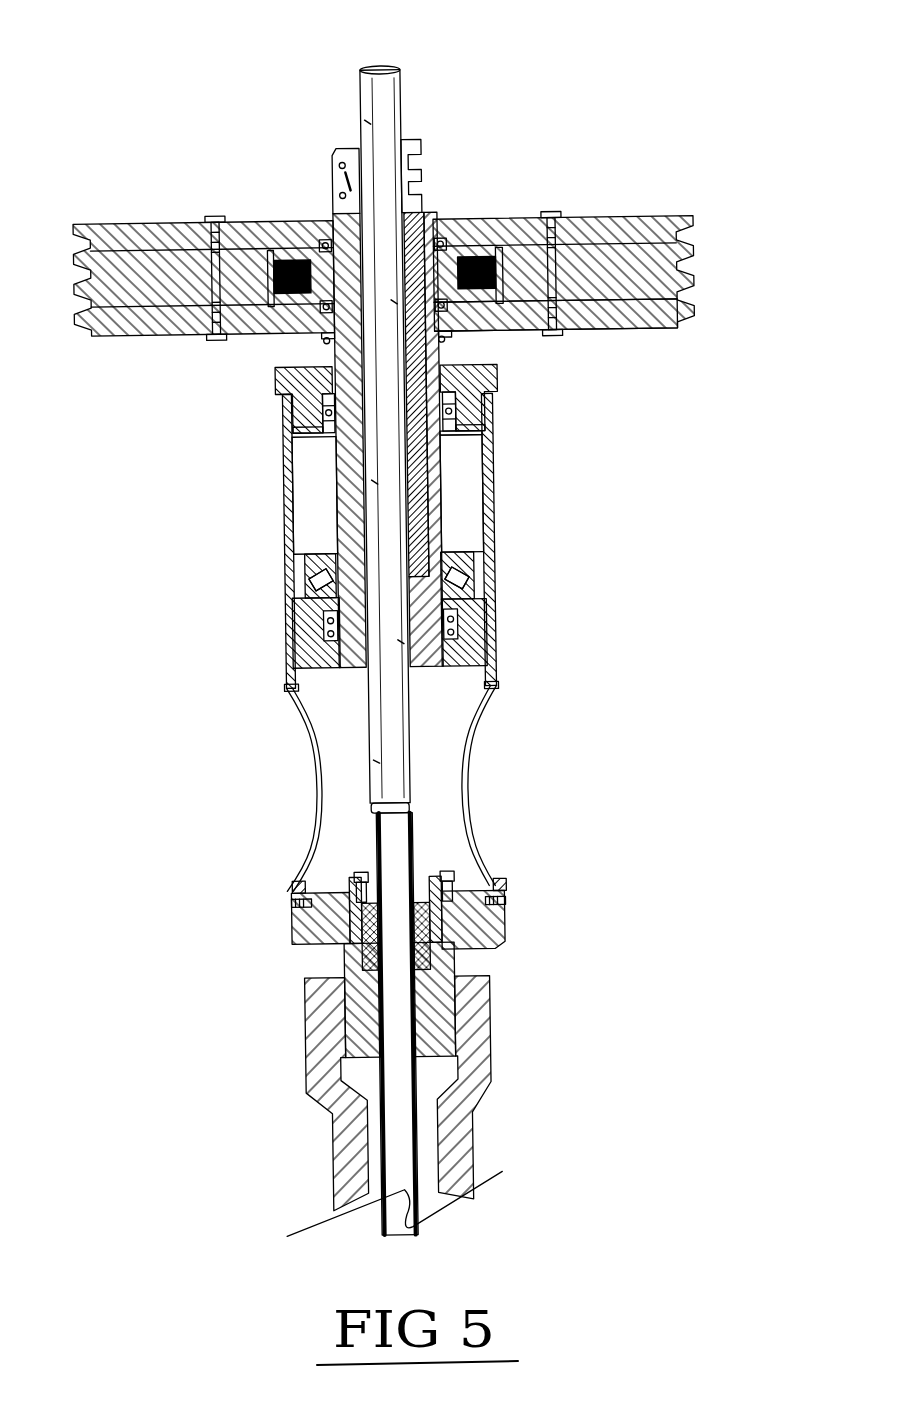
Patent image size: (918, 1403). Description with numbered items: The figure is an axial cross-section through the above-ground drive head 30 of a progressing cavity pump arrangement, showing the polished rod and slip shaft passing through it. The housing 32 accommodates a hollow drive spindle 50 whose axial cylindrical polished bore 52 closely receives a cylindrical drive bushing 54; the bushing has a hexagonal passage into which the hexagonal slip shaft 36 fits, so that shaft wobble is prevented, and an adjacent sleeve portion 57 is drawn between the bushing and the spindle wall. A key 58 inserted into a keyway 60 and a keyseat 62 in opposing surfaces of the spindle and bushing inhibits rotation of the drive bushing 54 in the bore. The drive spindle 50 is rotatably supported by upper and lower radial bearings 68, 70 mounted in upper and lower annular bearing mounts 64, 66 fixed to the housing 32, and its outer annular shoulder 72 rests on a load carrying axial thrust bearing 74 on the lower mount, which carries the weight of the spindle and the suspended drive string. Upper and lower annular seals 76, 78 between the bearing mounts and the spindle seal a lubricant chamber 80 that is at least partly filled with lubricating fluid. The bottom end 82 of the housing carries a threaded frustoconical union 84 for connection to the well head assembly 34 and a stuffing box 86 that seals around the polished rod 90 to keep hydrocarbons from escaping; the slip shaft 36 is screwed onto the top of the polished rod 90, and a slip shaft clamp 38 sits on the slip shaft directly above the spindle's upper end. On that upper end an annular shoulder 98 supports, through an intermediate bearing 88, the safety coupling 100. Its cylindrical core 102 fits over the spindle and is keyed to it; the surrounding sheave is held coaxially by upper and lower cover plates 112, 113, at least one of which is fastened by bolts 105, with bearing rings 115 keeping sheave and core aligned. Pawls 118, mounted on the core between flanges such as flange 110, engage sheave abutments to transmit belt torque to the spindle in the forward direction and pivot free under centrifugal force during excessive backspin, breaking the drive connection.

The drive head 30 is at (520, 559).
The housing 32 is at (493, 473).
The well head assembly 34 is at (453, 1122).
The slip shaft 36 is at (383, 68).
The slip shaft clamp 38 is at (405, 150).
The drive spindle 50 is at (460, 508).
The axial cylindrical polished bore 52 is at (357, 465).
The drive bushing 54 is at (405, 217).
The sleeve 57 is at (415, 255).
The key 58 is at (437, 345).
The keyway 60 is at (440, 455).
The keyseat 62 is at (440, 440).
The upper annular bearing mount 64 is at (498, 372).
The lower annular bearing mount 66 is at (485, 650).
The upper radial bearing 68 is at (277, 400).
The lower radial bearing 70 is at (310, 633).
The outer annular shoulder 72 is at (330, 555).
The axial thrust bearing 74 is at (460, 583).
The upper annular seal 76 is at (320, 432).
The lower annular seal 78 is at (337, 667).
The lubricant chamber 80 is at (468, 532).
The bottom end 82 is at (467, 935).
The threaded frustoconical union 84 is at (465, 1003).
The stuffing box 86 is at (360, 937).
The intermediate bearing 88 is at (325, 340).
The polished rod 90 is at (397, 840).
The annular shoulder 98 is at (330, 358).
The safety coupling 100 is at (238, 142).
The cylindrical core 102 is at (447, 267).
The bolts 105 is at (210, 217).
The flange 110 is at (283, 258).
The upper cover plate 112 is at (620, 220).
The lower cover plate 113 is at (648, 322).
The bearing rings 115 is at (317, 233).
The pawl 118 is at (453, 263).